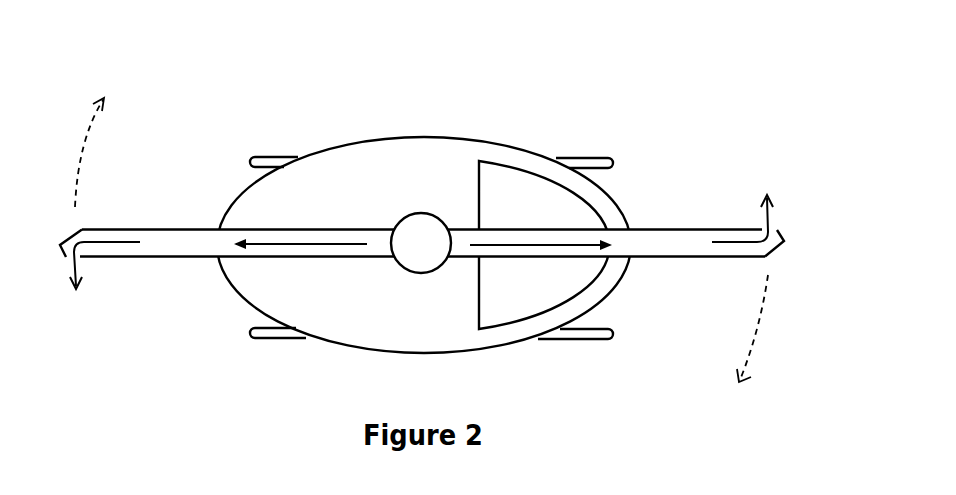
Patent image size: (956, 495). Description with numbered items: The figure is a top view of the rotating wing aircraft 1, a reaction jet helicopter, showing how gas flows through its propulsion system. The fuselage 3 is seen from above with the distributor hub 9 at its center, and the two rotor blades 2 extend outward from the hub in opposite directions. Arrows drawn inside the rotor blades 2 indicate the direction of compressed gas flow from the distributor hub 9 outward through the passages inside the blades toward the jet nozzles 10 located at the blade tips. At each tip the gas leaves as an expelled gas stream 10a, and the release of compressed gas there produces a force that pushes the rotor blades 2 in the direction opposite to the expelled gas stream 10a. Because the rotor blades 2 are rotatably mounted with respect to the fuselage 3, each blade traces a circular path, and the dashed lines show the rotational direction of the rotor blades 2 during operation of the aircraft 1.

The rotating wing aircraft 1 is at (426, 177).
The rotor blades 2 is at (163, 229).
The fuselage 3 is at (237, 291).
The distributor hub 9 is at (430, 214).
The jet nozzles 10 is at (66, 257).
The expelled gas stream 10a is at (77, 268).